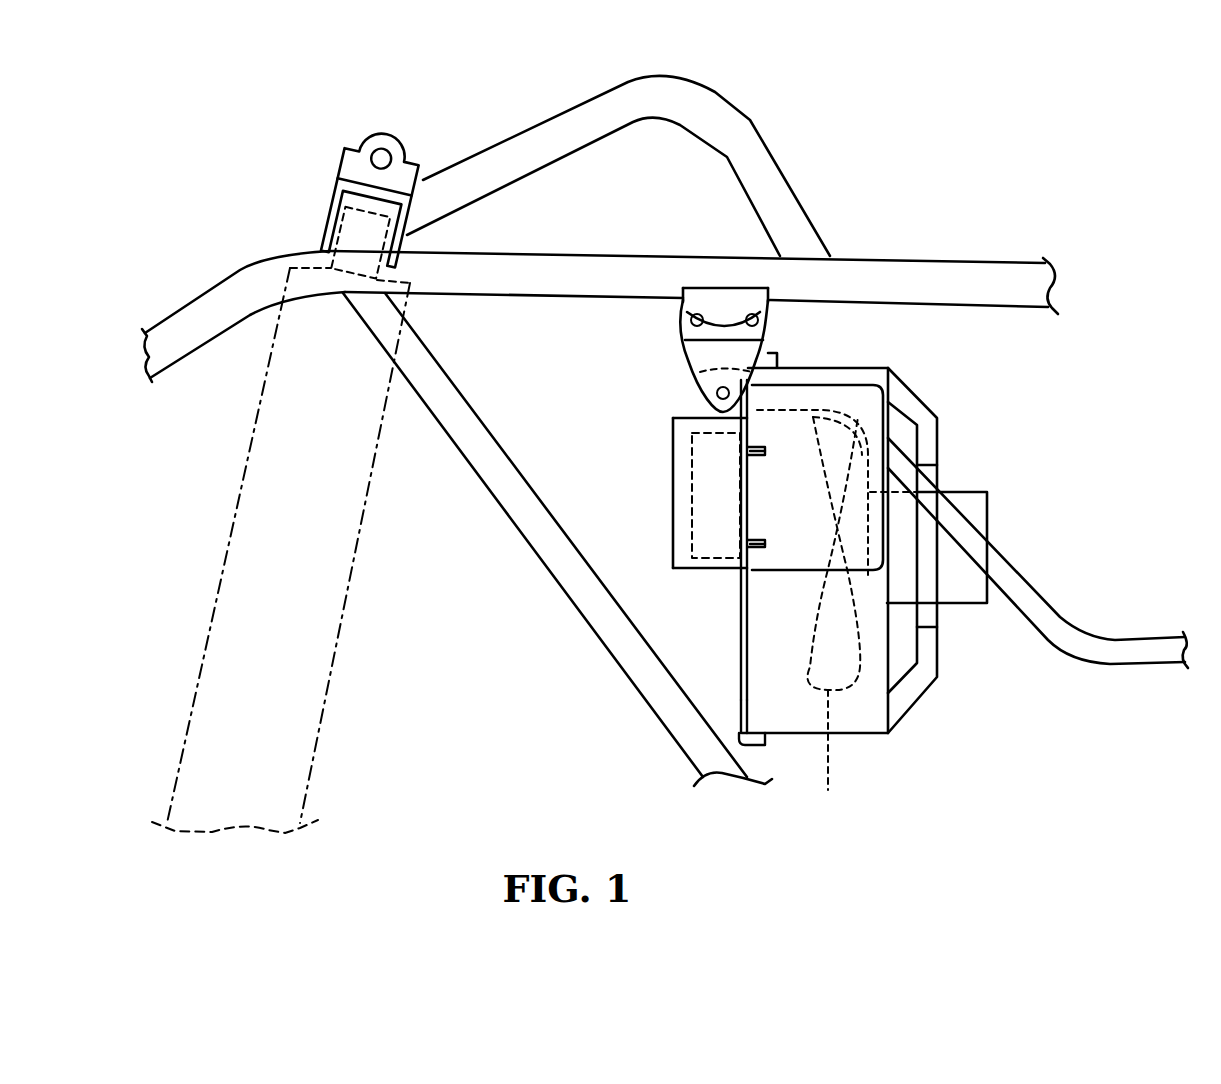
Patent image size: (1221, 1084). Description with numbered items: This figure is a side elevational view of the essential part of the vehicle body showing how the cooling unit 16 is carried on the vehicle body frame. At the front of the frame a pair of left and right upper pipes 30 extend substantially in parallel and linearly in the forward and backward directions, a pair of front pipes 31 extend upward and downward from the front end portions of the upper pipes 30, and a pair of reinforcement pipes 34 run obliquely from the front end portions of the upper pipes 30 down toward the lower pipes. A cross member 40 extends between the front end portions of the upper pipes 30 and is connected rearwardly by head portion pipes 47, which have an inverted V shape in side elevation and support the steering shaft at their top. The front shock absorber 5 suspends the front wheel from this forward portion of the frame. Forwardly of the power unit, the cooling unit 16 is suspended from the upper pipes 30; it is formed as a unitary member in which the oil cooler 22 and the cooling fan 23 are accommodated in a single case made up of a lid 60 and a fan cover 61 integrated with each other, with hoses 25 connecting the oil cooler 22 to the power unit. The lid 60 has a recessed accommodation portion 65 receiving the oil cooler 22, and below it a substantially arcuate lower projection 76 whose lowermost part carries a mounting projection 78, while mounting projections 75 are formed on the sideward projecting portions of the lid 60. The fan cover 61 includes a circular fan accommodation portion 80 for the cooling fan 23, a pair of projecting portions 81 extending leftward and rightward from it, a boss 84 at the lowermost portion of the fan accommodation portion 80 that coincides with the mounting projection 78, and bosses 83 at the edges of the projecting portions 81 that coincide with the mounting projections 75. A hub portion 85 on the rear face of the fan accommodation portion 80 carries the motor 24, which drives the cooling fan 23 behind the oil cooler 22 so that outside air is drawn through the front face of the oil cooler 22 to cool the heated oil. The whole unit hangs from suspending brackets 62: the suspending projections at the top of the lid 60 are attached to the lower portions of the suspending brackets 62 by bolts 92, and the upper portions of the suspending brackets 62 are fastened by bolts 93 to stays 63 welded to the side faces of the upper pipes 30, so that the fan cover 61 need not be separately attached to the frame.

The front shock absorber 5 is at (243, 568).
The cooling unit 16 is at (855, 343).
The oil cooler 22 is at (700, 478).
The cooling fan 23 is at (812, 616).
The motor 24 is at (955, 605).
The hose 25 is at (1083, 642).
The upper pipe 30 is at (967, 277).
The front pipe 31 is at (195, 322).
The reinforcement pipe 34 is at (553, 560).
The cross member 40 is at (322, 230).
The head portion pipe 47 is at (518, 140).
The lid 60 is at (673, 527).
The fan cover 61 is at (907, 700).
The suspending bracket 62 is at (707, 335).
The stay 63 is at (710, 298).
The accommodation portion 65 is at (673, 497).
The mounting projection 75 is at (747, 450).
The lower projection 76 is at (738, 687).
The mounting projection 78 is at (740, 733).
The fan accommodation portion 80 is at (858, 734).
The projecting portion 81 is at (790, 562).
The boss 83 is at (757, 448).
The boss 84 is at (755, 744).
The hub portion 85 is at (930, 567).
The bolt 92 is at (705, 401).
The bolt 93 is at (683, 288).